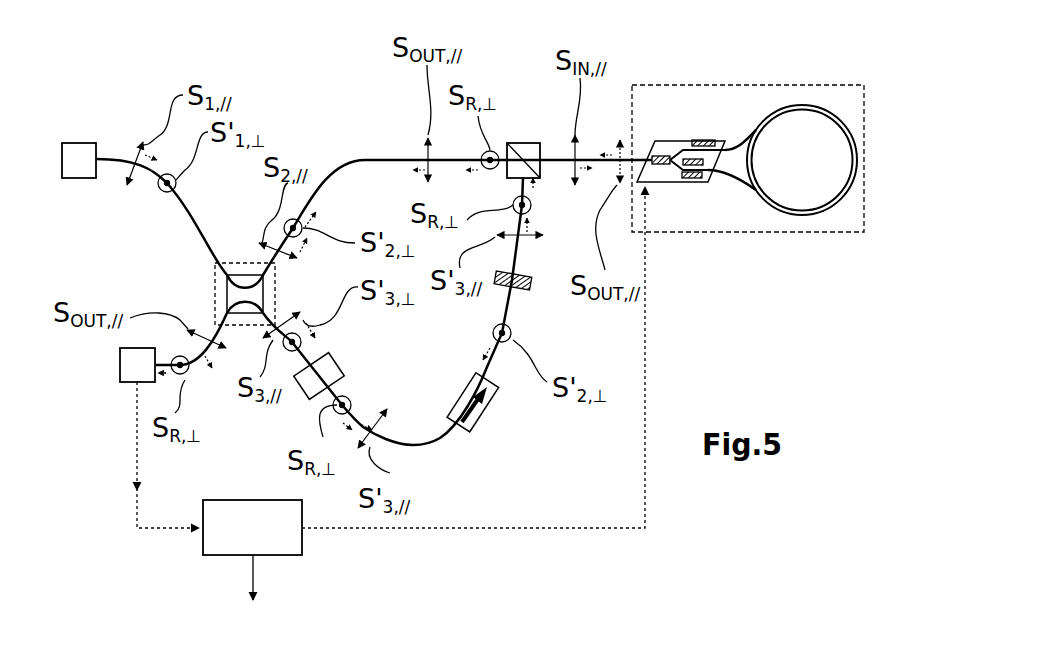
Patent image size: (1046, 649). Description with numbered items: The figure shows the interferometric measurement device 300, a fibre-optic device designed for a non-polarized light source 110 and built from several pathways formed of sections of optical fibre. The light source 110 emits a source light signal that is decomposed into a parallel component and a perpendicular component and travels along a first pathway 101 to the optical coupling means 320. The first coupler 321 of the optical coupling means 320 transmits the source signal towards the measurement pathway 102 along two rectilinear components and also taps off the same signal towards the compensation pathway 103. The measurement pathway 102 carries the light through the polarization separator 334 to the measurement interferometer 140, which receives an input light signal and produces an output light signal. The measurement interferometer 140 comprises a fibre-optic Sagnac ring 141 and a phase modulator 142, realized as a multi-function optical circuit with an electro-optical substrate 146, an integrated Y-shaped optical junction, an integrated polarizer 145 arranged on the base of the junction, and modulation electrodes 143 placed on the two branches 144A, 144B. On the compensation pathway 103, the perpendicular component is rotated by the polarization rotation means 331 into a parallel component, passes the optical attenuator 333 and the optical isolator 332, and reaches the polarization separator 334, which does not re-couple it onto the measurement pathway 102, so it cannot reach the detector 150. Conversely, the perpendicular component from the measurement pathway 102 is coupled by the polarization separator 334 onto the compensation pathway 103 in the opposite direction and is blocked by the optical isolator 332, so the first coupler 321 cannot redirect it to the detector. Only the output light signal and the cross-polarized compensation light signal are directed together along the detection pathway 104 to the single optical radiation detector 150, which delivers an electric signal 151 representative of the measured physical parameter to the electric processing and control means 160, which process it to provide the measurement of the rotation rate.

The light source 110 is at (81, 143).
The source pathway 101 is at (195, 230).
The optical coupling means 320 is at (207, 295).
The first coupler 321 is at (243, 272).
The measurement pathway 102 is at (386, 158).
The polarization separator 334 is at (530, 143).
The compensation pathway 103 is at (413, 447).
The detection pathway 104 is at (205, 370).
The optical radiation detector 150 is at (120, 358).
The electric signal 151 is at (135, 497).
The electric processing and control means 160 is at (225, 556).
The polarization rotation means 331 is at (343, 370).
The optical isolator 332 is at (490, 420).
The optical attenuator 333 is at (533, 285).
The measurement interferometer 140 is at (805, 240).
The integrated polarizer 145 is at (652, 233).
The electro-optical substrate 146 is at (670, 147).
The first branch of the Y-junction 144A is at (700, 140).
The second branch of the Y-junction 144B is at (655, 183).
The phase modulator 142 is at (720, 150).
The modulation electrodes 143 is at (722, 178).
The fibre-optic Sagnac ring 141 is at (802, 105).
The interferometric measurement device 300 is at (689, 514).